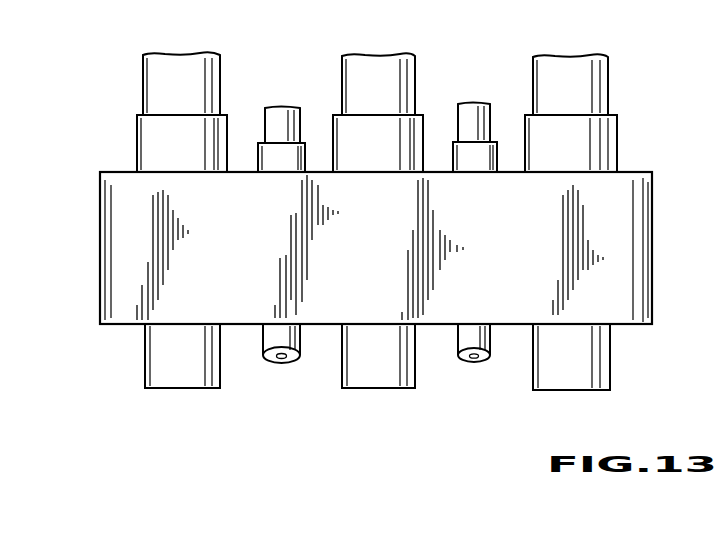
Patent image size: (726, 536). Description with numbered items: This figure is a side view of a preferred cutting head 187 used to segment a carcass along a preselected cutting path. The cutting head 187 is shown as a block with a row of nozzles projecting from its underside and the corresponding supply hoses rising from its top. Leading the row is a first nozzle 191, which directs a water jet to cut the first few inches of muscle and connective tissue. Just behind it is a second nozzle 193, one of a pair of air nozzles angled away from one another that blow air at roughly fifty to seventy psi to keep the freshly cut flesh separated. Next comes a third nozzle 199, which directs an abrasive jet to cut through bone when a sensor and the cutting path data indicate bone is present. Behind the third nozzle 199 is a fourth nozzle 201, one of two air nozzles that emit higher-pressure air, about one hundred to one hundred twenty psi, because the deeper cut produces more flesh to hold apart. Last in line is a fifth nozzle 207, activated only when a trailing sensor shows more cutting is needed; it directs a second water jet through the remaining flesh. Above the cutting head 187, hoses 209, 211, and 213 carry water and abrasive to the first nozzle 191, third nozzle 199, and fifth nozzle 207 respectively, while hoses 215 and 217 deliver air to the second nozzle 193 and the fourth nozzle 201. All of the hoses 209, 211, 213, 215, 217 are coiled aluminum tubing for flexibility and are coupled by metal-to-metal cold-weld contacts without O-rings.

The cutting head 187 is at (652, 228).
The first nozzle 191 is at (165, 388).
The second nozzle 193 is at (277, 364).
The third nozzle 199 is at (365, 388).
The fourth nozzle 201 is at (472, 362).
The fifth nozzle 207 is at (598, 392).
The hose 209 is at (143, 93).
The hose 211 is at (415, 70).
The hose 213 is at (609, 76).
The hose 215 is at (298, 113).
The hose 217 is at (493, 110).